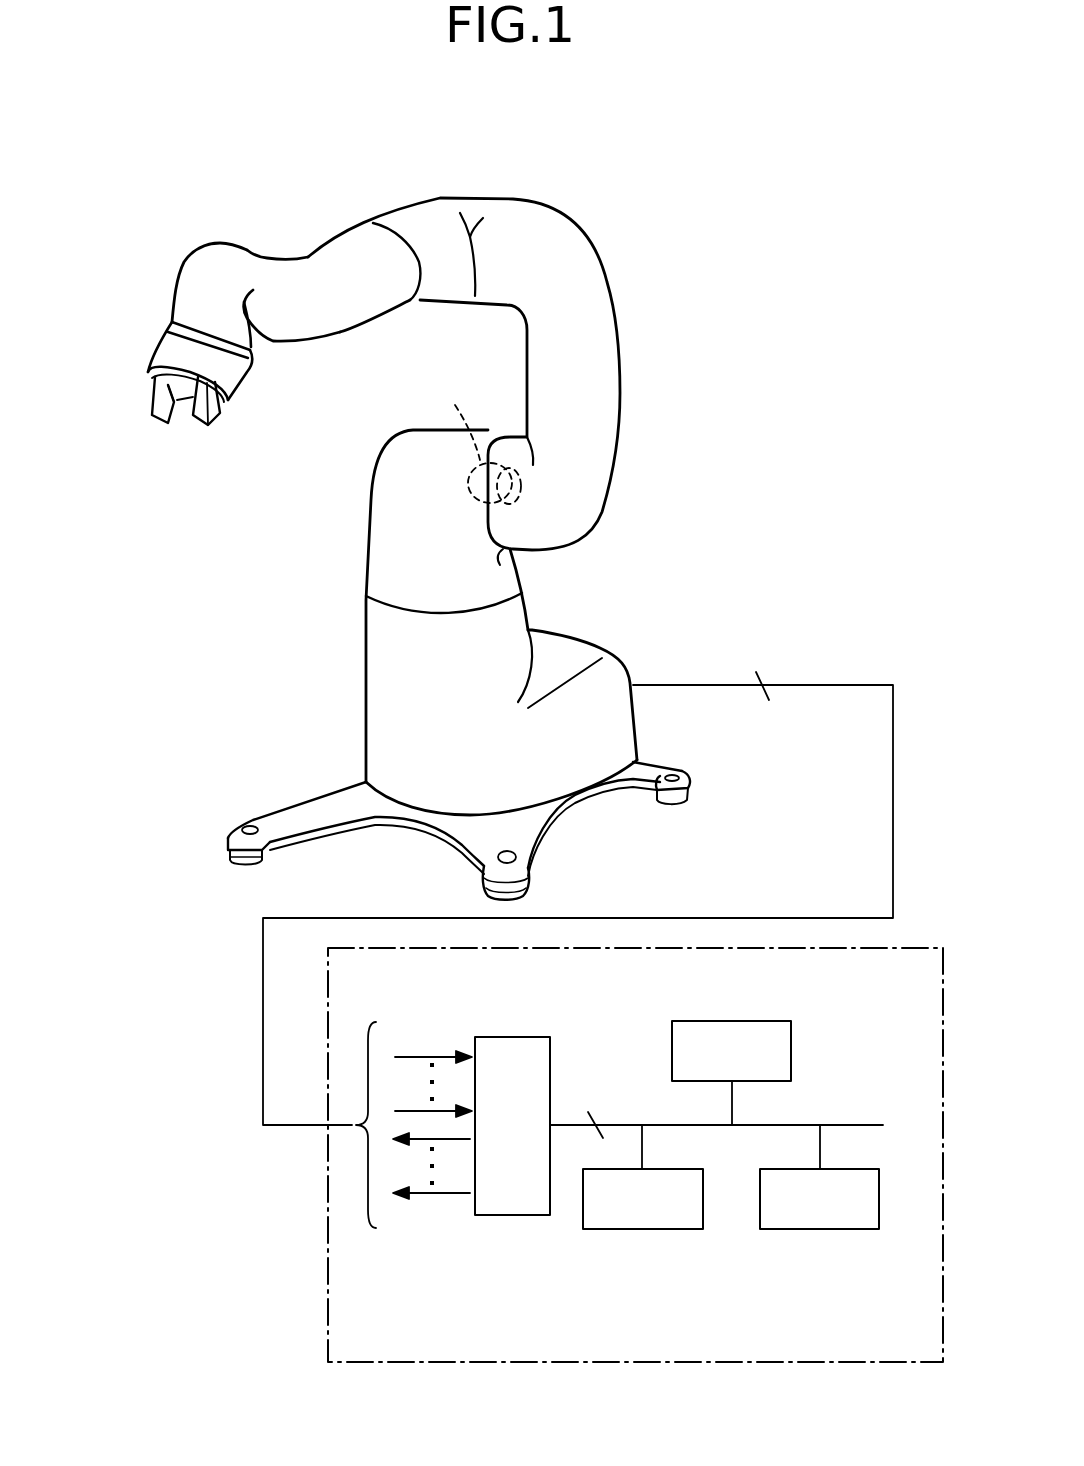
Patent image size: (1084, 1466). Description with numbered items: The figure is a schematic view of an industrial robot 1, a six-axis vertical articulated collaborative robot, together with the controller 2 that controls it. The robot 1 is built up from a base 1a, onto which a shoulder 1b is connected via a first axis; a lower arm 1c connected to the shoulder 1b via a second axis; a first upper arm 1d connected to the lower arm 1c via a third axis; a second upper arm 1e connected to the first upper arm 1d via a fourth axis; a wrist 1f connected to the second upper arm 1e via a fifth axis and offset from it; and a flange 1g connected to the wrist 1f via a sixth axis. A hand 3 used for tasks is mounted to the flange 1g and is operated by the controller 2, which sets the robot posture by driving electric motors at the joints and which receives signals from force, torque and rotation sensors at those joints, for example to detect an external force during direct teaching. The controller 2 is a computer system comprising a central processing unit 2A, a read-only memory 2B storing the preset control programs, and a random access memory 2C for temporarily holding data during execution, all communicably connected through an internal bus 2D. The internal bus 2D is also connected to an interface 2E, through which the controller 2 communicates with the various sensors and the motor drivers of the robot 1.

The industrial robot 1 is at (610, 182).
The base 1a is at (603, 645).
The shoulder 1b is at (370, 553).
The lower arm 1c is at (620, 442).
The first upper arm 1d is at (432, 200).
The second upper arm 1e is at (304, 257).
The wrist 1f is at (177, 281).
The flange 1g is at (148, 348).
The hand 3 is at (148, 413).
The controller 2 is at (327, 1218).
The central processing unit (CPU) 2A is at (739, 1021).
The read-only memory (ROM) 2B is at (638, 1229).
The random access memory (RAM) 2C is at (823, 1229).
The internal bus 2D is at (785, 1125).
The interface 2E is at (512, 1037).